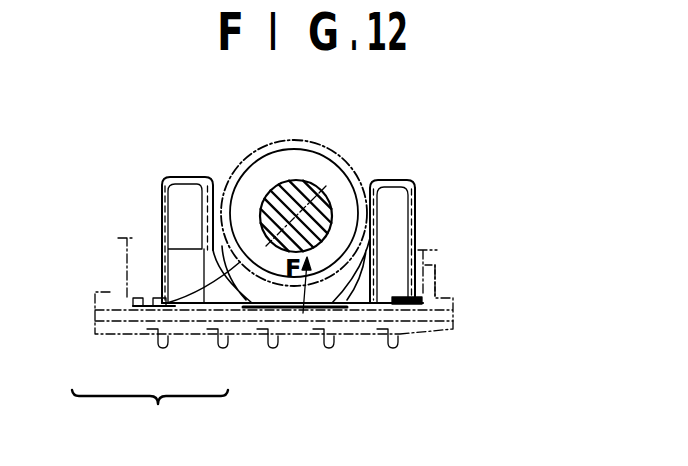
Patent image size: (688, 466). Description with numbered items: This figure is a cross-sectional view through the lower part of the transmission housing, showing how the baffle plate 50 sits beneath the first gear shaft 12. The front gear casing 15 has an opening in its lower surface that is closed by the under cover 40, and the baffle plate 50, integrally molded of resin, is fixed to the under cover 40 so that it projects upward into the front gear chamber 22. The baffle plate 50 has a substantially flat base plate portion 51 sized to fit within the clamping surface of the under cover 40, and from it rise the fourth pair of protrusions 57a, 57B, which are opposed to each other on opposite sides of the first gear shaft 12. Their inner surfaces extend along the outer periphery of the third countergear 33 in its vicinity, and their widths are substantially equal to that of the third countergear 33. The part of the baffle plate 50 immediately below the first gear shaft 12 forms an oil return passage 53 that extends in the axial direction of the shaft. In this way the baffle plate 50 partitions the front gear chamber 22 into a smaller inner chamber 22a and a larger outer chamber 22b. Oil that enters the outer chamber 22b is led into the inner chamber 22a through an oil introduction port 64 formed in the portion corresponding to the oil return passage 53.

The first gear shaft 12 is at (327, 182).
The third countergear 33 is at (297, 142).
The baffle plate 50 is at (400, 173).
The protrusion 57B is at (184, 175).
The protrusion 57a is at (416, 187).
The front gear casing 15 is at (443, 266).
The under cover 40 is at (418, 336).
The front gear chamber 22 is at (150, 417).
The inner chamber 22a is at (191, 299).
The outer chamber 22b is at (238, 296).
The base plate portion 51 is at (338, 300).
The oil return passage 53 is at (264, 300).
The oil introduction port 64 is at (279, 301).